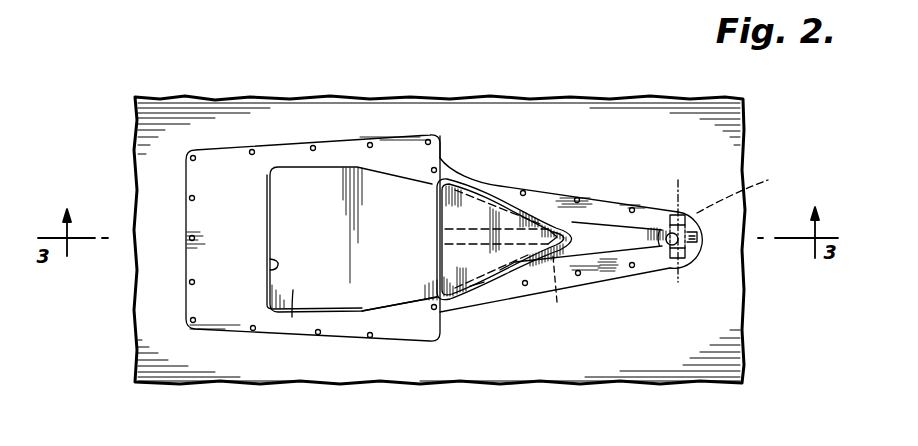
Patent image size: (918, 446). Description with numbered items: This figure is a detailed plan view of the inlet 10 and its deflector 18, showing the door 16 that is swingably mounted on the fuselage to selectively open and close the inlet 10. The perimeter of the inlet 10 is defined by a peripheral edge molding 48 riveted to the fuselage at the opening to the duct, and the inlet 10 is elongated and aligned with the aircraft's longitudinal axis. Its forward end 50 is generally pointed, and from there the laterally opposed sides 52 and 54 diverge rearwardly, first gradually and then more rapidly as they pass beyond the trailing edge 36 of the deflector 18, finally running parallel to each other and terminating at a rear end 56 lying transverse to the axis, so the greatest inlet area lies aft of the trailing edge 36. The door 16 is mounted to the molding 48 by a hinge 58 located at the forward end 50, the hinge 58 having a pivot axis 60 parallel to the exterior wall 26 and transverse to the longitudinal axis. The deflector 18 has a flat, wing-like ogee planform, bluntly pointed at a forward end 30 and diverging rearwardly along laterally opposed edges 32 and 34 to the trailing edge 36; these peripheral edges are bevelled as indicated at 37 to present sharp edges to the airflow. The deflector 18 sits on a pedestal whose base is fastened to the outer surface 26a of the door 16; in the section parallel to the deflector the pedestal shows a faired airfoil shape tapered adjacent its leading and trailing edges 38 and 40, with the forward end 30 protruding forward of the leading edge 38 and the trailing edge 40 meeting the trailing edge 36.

The inlet 10 is at (484, 240).
The inlet door 16 is at (292, 317).
The deflector 18 is at (491, 187).
The exterior wall 26 is at (679, 360).
The outer surface of door 26a is at (330, 222).
The forward end of deflector 30 is at (594, 262).
The laterally opposed edge 32 is at (548, 210).
The laterally opposed edge 34 is at (528, 258).
The trailing edge of deflector 36 is at (424, 280).
The bevel 37 is at (484, 283).
The leading edge of pedestal 38 is at (566, 289).
The trailing edge of pedestal 40 is at (430, 237).
The peripheral edge molding 48 is at (234, 158).
The forward end of inlet 50 is at (677, 258).
The laterally opposed side of inlet 52 is at (438, 148).
The laterally opposed side of inlet 54 is at (401, 290).
The rear end of inlet 56 is at (268, 264).
The hinge 58 is at (740, 185).
The pivot axis 60 is at (676, 184).